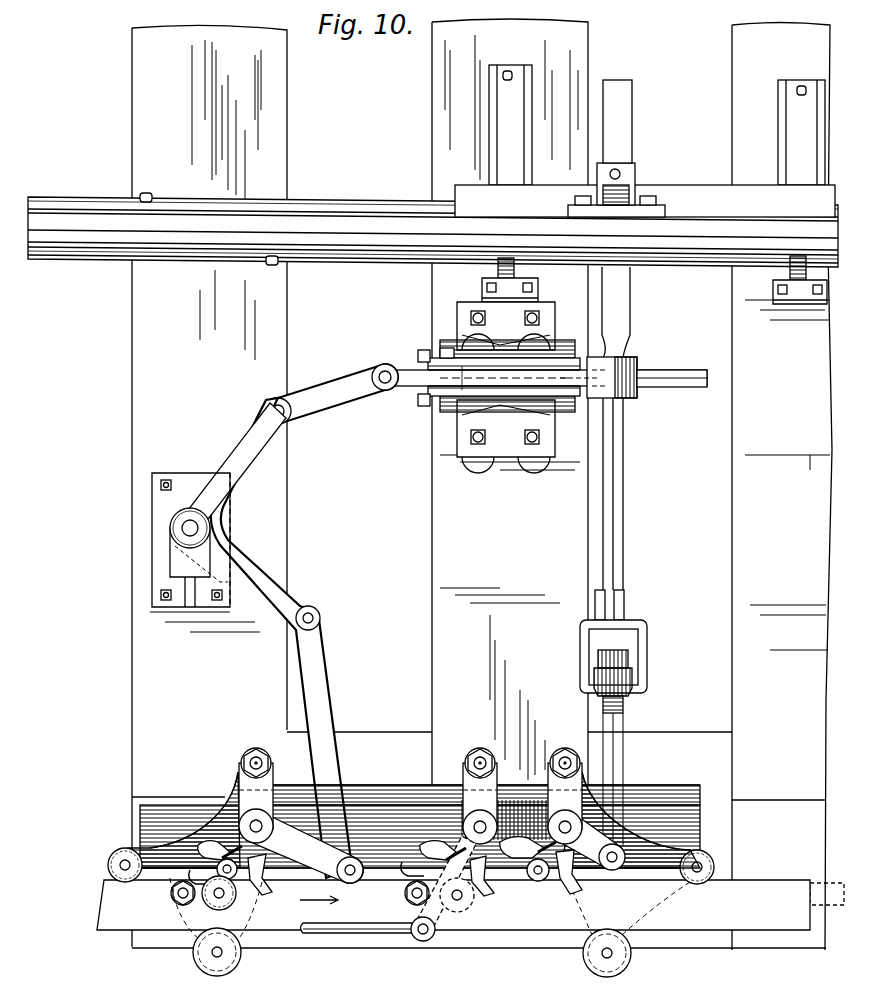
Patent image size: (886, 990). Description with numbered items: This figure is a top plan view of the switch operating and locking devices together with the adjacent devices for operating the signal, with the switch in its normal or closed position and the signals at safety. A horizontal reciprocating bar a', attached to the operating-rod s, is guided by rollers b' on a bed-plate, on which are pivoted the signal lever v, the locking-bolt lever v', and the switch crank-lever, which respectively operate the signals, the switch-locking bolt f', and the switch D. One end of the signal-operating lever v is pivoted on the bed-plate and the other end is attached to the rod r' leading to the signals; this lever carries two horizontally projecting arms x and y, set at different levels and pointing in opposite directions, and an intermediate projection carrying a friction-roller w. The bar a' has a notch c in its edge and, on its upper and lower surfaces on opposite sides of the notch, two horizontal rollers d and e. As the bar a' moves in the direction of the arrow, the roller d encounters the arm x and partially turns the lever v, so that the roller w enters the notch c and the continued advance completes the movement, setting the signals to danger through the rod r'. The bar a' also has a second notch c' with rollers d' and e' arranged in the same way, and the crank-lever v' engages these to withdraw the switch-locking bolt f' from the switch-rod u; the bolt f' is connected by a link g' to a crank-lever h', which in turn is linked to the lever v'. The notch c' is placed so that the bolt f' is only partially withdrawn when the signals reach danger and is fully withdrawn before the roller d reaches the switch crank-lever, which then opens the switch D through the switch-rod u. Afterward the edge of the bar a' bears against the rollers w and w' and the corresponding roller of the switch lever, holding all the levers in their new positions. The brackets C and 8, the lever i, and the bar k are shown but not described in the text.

The guide bracket 8 is at (500, 125).
The cross beam C is at (433, 230).
The switch D is at (645, 201).
The switch-rod u is at (613, 462).
The horizontal shaft k' is at (551, 377).
The bearing blocks l' is at (506, 387).
The clamp nuts n' is at (507, 377).
The collar o' is at (445, 337).
The bolt p' is at (417, 364).
The operating-rod s is at (833, 884).
The switch-locking bolt f' is at (672, 368).
The link g' is at (331, 394).
The crank-lever h' is at (234, 467).
The lever i is at (281, 638).
The cross bar k is at (420, 826).
The horizontal reciprocating bar a' is at (453, 905).
The rod r' is at (361, 917).
The crank-lever v' is at (245, 815).
The rollers b' is at (408, 853).
The latch y' is at (214, 849).
The roller w' is at (232, 861).
The pawl x' is at (268, 875).
The second notch c' is at (194, 871).
The roller d' is at (224, 901).
The roller e' is at (166, 901).
The roller b is at (412, 952).
The signal-operating lever v is at (443, 888).
The arm y is at (438, 850).
The friction-roller w is at (456, 851).
The arm x is at (489, 877).
The notch c is at (407, 861).
The roller d is at (464, 900).
The roller e is at (406, 892).